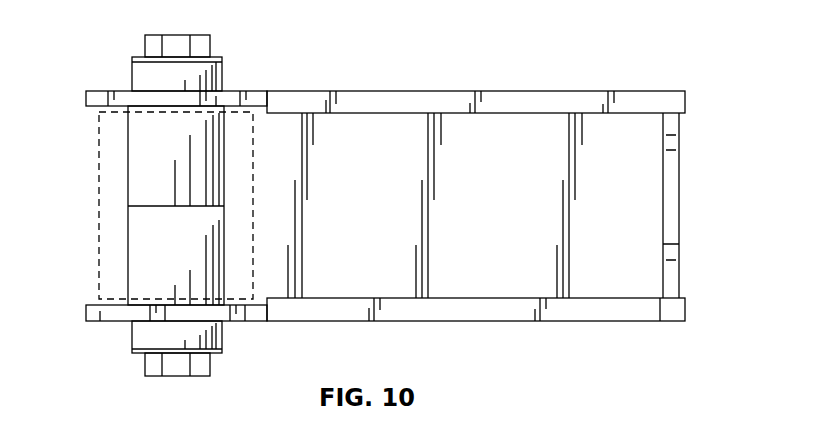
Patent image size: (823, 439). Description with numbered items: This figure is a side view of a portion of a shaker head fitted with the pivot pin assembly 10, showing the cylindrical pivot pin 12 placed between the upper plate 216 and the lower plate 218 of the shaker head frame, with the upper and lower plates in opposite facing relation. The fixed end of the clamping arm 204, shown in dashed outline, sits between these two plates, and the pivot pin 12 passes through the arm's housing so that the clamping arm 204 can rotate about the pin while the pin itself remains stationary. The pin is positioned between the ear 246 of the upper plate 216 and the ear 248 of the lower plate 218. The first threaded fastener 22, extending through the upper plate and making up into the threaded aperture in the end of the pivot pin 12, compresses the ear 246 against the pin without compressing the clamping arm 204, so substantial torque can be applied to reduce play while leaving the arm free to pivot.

The pivot pin assembly 10 is at (93, 24).
The cylindrical pivot pin 12 is at (176, 157).
The first threaded fastener 22 is at (208, 43).
The clamping arm 204 is at (99, 193).
The upper plate 216 is at (688, 102).
The lower plate 218 is at (688, 310).
The ear 246 is at (86, 98).
The ear 248 is at (86, 312).